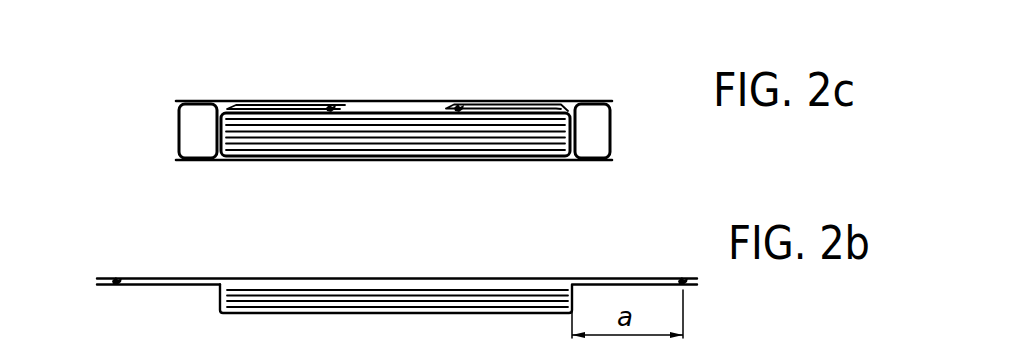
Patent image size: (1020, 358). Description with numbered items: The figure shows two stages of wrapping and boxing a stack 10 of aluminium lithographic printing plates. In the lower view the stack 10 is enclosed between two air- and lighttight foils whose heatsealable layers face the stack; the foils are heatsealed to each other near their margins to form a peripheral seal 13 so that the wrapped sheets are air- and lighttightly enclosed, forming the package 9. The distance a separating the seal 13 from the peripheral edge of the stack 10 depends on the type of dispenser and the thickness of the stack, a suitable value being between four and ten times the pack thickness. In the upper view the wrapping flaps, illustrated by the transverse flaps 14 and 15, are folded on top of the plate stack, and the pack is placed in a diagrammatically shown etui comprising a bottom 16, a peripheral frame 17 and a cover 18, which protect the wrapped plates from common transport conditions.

In FIG. 2B, the package 9 is at (428, 266).
In FIG. 2B, the stack 10 is at (343, 284).
In FIG. 2B, the peripheral seal 13 is at (683, 279).
In FIG. 2C, the transverse flap 14 is at (297, 104).
In FIG. 2C, the transverse flap 15 is at (490, 102).
In FIG. 2C, the bottom 16 is at (505, 162).
In FIG. 2C, the peripheral frame 17 is at (600, 128).
In FIG. 2C, the cover 18 is at (415, 102).